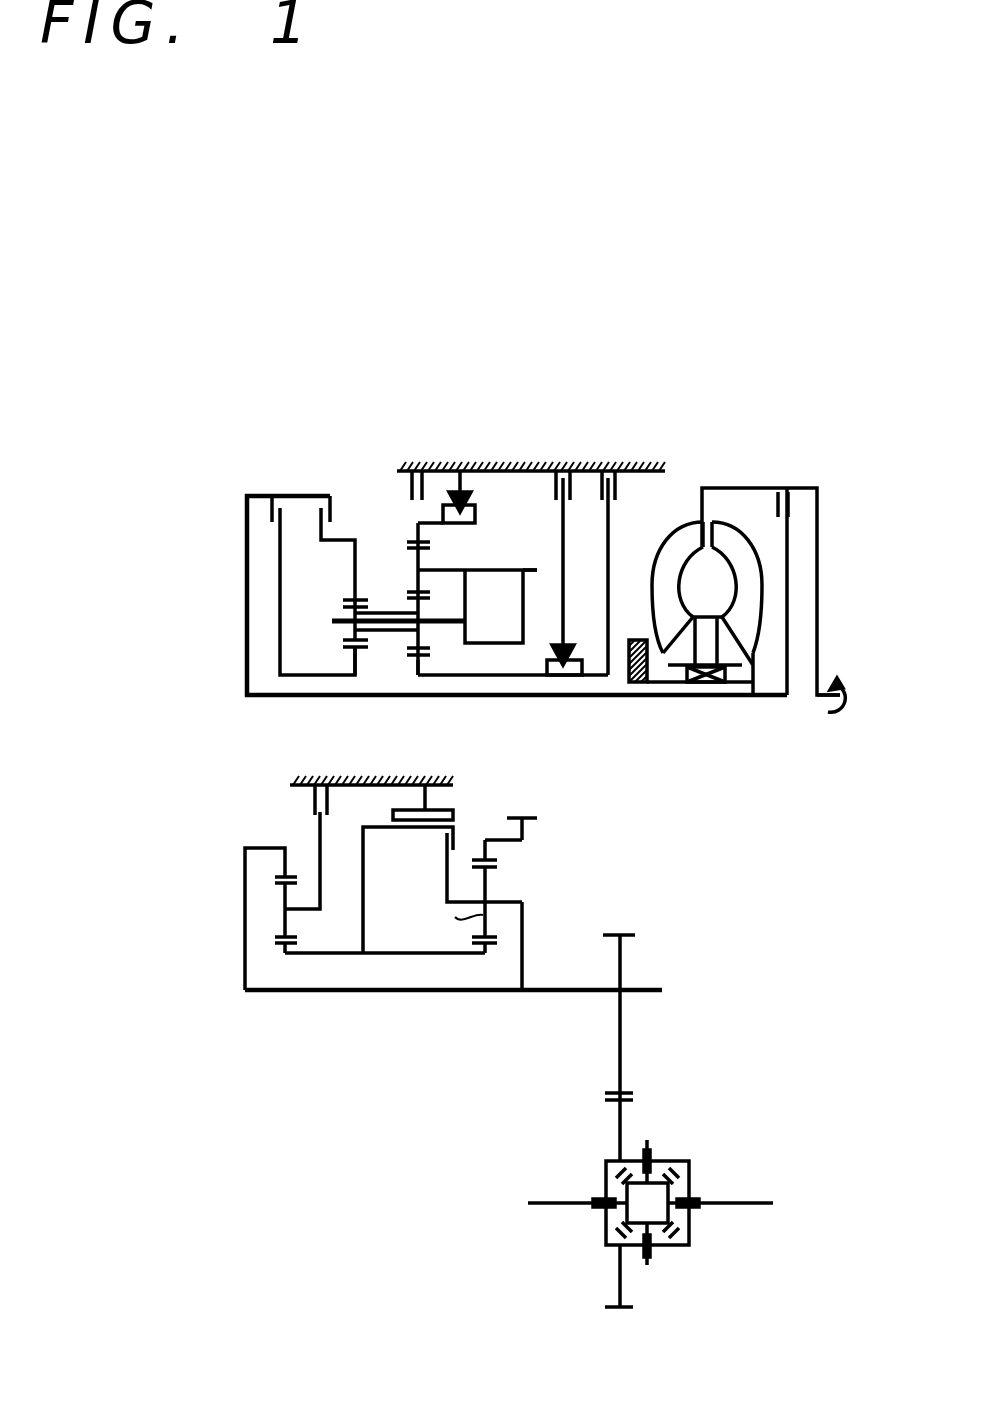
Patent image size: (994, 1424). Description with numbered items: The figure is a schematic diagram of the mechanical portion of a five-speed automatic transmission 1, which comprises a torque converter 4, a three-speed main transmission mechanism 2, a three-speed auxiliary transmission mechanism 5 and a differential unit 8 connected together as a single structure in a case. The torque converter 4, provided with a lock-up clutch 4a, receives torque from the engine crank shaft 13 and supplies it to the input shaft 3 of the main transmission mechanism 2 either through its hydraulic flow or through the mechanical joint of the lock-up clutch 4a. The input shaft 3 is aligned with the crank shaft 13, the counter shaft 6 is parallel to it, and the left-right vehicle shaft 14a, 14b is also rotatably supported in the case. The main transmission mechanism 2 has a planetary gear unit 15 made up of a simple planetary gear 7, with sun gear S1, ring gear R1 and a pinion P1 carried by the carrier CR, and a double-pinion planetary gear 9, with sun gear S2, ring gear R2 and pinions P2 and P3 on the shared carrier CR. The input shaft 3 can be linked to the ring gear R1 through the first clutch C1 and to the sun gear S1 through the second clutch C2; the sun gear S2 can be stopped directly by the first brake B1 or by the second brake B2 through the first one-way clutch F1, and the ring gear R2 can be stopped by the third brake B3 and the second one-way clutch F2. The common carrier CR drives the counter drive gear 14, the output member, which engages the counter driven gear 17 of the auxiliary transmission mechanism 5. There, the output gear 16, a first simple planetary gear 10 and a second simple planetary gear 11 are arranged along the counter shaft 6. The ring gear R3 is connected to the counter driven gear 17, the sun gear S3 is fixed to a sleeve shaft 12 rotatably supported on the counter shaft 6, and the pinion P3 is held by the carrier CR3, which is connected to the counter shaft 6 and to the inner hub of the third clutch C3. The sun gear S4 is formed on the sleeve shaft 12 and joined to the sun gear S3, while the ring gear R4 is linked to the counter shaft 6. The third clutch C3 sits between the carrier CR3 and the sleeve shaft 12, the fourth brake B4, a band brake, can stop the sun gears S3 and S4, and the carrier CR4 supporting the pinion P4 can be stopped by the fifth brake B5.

The automatic transmission 1 is at (478, 313).
The main transmission mechanism 2 is at (590, 392).
The input shaft 3 is at (630, 698).
The torque converter 4 is at (717, 472).
The lock-up clutch 4a is at (790, 508).
The auxiliary transmission mechanism 5 is at (150, 823).
The counter shaft 6 is at (452, 992).
The simple planetary gear 7 is at (350, 530).
The differential unit 8 is at (719, 1146).
The double-pinion planetary gear 9 is at (400, 512).
The first simple planetary gear 10 is at (528, 855).
The second simple planetary gear 11 is at (218, 902).
The sleeve shaft 12 is at (393, 957).
The crank shaft 13 is at (833, 706).
The counter drive gear 14 is at (540, 593).
The third shaft 14a is at (550, 1208).
The third shaft 14b is at (745, 1208).
The planetary gear unit 15 is at (397, 392).
The output gear 16 is at (622, 962).
The counter driven gear 17 is at (535, 816).
The first clutch C1 is at (328, 532).
The second clutch C2 is at (304, 569).
The third clutch C3 is at (442, 889).
The first brake B1 is at (607, 550).
The second brake B2 is at (559, 463).
The third brake B3 is at (414, 463).
The fourth brake B4 is at (423, 780).
The fifth brake B5 is at (322, 778).
The first one-way clutch F1 is at (573, 576).
The second one-way clutch F2 is at (462, 474).
The ring gear R1 is at (353, 570).
The ring gear R2 is at (425, 538).
The ring gear R3 is at (472, 840).
The ring gear R4 is at (245, 848).
The pinion P1 is at (345, 607).
The pinion P2 is at (418, 633).
The pinion P3 is at (416, 580).
The pinion P4 is at (300, 909).
The sun gear S1 is at (343, 648).
The sun gear S2 is at (430, 655).
The sun gear S3 is at (487, 948).
The sun gear S4 is at (284, 952).
The carrier CR is at (467, 603).
The carrier CR3 is at (522, 928).
The carrier CR4 is at (318, 843).